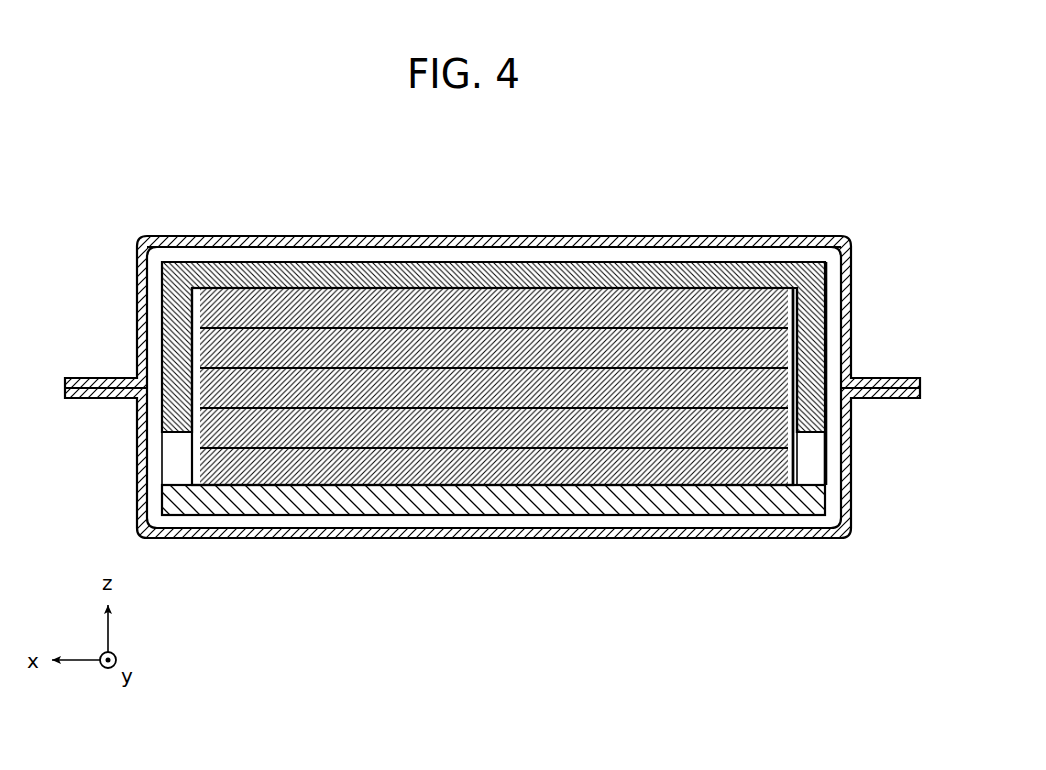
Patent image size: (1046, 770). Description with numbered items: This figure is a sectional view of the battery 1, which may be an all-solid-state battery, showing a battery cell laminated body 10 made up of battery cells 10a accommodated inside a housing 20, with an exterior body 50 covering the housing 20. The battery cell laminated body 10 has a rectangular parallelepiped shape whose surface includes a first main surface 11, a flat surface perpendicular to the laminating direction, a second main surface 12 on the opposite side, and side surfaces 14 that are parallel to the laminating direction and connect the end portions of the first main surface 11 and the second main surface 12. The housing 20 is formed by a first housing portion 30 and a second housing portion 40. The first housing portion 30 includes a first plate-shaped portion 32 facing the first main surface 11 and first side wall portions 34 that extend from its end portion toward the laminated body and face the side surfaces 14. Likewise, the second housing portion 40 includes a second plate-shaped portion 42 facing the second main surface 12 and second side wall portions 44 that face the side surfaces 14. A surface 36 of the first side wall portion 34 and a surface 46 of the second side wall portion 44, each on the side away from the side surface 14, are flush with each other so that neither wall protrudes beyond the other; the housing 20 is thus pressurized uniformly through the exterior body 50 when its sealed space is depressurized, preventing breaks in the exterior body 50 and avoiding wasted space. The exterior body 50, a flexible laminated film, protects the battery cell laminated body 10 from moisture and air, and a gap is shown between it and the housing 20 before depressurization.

The battery 1 is at (120, 157).
The battery cell laminated body 10 is at (162, 485).
The battery cells 10a is at (508, 307).
The first main surface 11 is at (325, 288).
The second main surface 12 is at (273, 490).
The side surfaces 14 is at (796, 441).
The housing 20 is at (155, 276).
The first housing portion 30 is at (842, 166).
The first plate-shaped portion 32 is at (735, 275).
The first side wall portions 34 is at (812, 300).
The surface 36 is at (830, 330).
The second housing portion 40 is at (820, 614).
The second plate-shaped portion 42 is at (712, 505).
The second side wall portions 44 is at (813, 475).
The surface 46 is at (830, 440).
The exterior body 50 is at (552, 237).